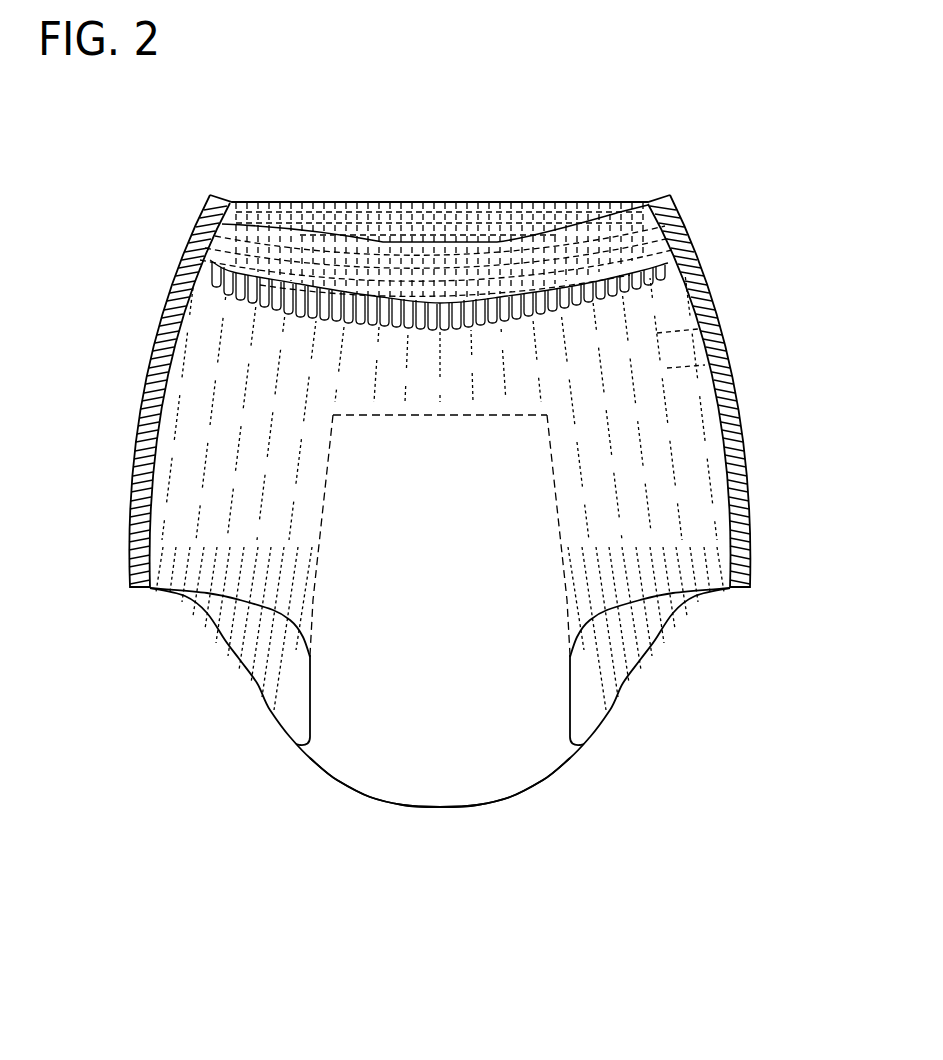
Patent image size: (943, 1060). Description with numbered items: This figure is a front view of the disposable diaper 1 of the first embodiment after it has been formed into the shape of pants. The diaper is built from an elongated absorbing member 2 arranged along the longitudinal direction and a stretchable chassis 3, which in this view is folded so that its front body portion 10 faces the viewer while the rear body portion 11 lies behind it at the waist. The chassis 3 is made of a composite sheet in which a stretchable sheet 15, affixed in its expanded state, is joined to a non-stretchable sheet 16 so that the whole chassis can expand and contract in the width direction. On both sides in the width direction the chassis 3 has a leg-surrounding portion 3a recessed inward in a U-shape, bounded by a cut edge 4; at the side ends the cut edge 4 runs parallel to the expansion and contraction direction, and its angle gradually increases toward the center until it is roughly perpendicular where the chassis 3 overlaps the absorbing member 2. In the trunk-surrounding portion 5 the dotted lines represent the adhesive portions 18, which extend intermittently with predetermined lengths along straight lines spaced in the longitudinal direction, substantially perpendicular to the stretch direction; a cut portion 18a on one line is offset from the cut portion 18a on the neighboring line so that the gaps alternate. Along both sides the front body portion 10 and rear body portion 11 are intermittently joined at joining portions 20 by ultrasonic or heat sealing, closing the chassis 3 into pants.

The disposable diaper 1 is at (600, 134).
The absorbing member 2 is at (445, 777).
The chassis 3 is at (233, 352).
The leg-surrounding portion 3a is at (260, 658).
The cut edge 4 is at (238, 597).
The trunk-surrounding portion 5 is at (693, 420).
The front body portion 10 is at (195, 482).
The rear body portion 11 is at (331, 201).
The stretchable sheet 15 is at (194, 383).
The non-stretchable sheet 16 is at (420, 201).
The adhesive portions 18 is at (700, 311).
The cut portion 18a is at (712, 352).
The joining portions 20 is at (142, 567).